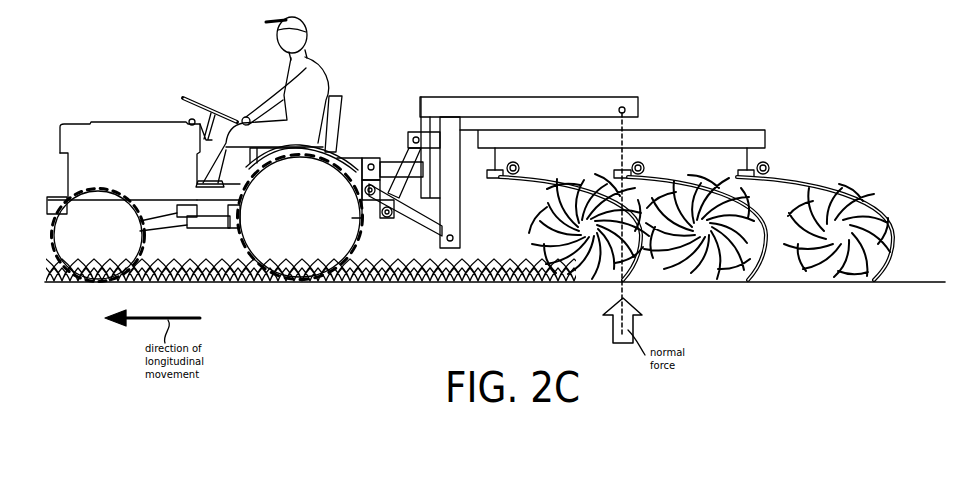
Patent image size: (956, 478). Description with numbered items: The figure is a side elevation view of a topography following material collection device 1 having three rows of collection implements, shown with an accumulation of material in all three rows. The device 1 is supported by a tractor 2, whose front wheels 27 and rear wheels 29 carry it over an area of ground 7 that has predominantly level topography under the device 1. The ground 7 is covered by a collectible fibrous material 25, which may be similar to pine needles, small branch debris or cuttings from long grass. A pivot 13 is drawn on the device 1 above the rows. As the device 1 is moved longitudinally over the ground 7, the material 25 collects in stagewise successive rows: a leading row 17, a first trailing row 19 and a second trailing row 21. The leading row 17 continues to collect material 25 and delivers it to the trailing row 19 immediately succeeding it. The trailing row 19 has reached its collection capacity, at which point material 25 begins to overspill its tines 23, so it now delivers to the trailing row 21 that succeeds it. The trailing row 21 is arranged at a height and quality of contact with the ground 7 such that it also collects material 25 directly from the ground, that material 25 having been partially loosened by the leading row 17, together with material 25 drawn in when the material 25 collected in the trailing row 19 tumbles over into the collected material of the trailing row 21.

The topography following material collection device 1 is at (722, 70).
The tractor 2 is at (205, 149).
The ground 7 is at (346, 347).
The pivot 13 is at (622, 107).
The leading row 17 is at (575, 300).
The first trailing row 19 is at (728, 300).
The second trailing row 21 is at (850, 300).
The collection tines 23 is at (558, 178).
The collectible material 25 is at (241, 270).
The front wheels of the tractor 27 is at (89, 243).
The rear wheels of the tractor 29 is at (291, 232).